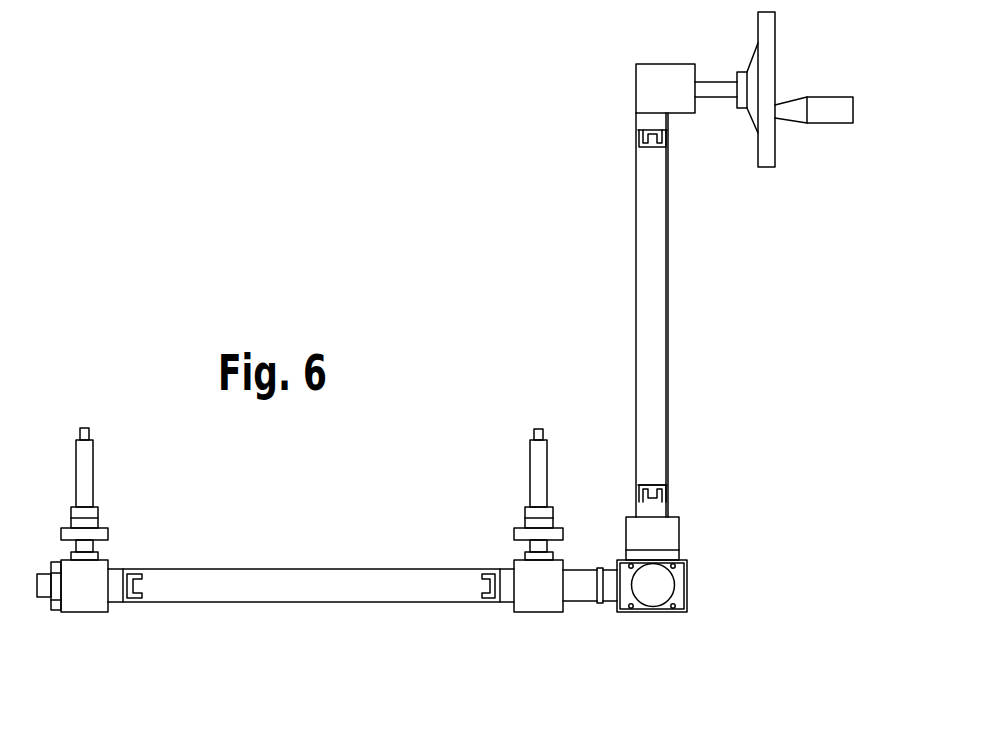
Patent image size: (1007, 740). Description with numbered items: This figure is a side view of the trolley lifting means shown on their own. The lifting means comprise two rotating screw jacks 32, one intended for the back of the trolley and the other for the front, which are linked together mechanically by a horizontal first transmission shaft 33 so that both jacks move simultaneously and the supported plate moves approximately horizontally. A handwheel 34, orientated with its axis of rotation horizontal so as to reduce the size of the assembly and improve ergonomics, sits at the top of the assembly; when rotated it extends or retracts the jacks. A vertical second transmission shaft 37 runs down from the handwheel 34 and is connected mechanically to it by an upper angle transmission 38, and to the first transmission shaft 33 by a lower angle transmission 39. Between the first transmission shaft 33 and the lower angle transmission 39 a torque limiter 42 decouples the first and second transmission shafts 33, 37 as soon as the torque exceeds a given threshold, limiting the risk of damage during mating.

The rotating screw jack 32 is at (85, 480).
The first transmission shaft 33 is at (326, 569).
The handwheel 34 is at (777, 148).
The second transmission shaft 37 is at (636, 228).
The angle transmission 38 is at (636, 81).
The angle transmission 39 is at (663, 612).
The torque limiter 42 is at (578, 569).